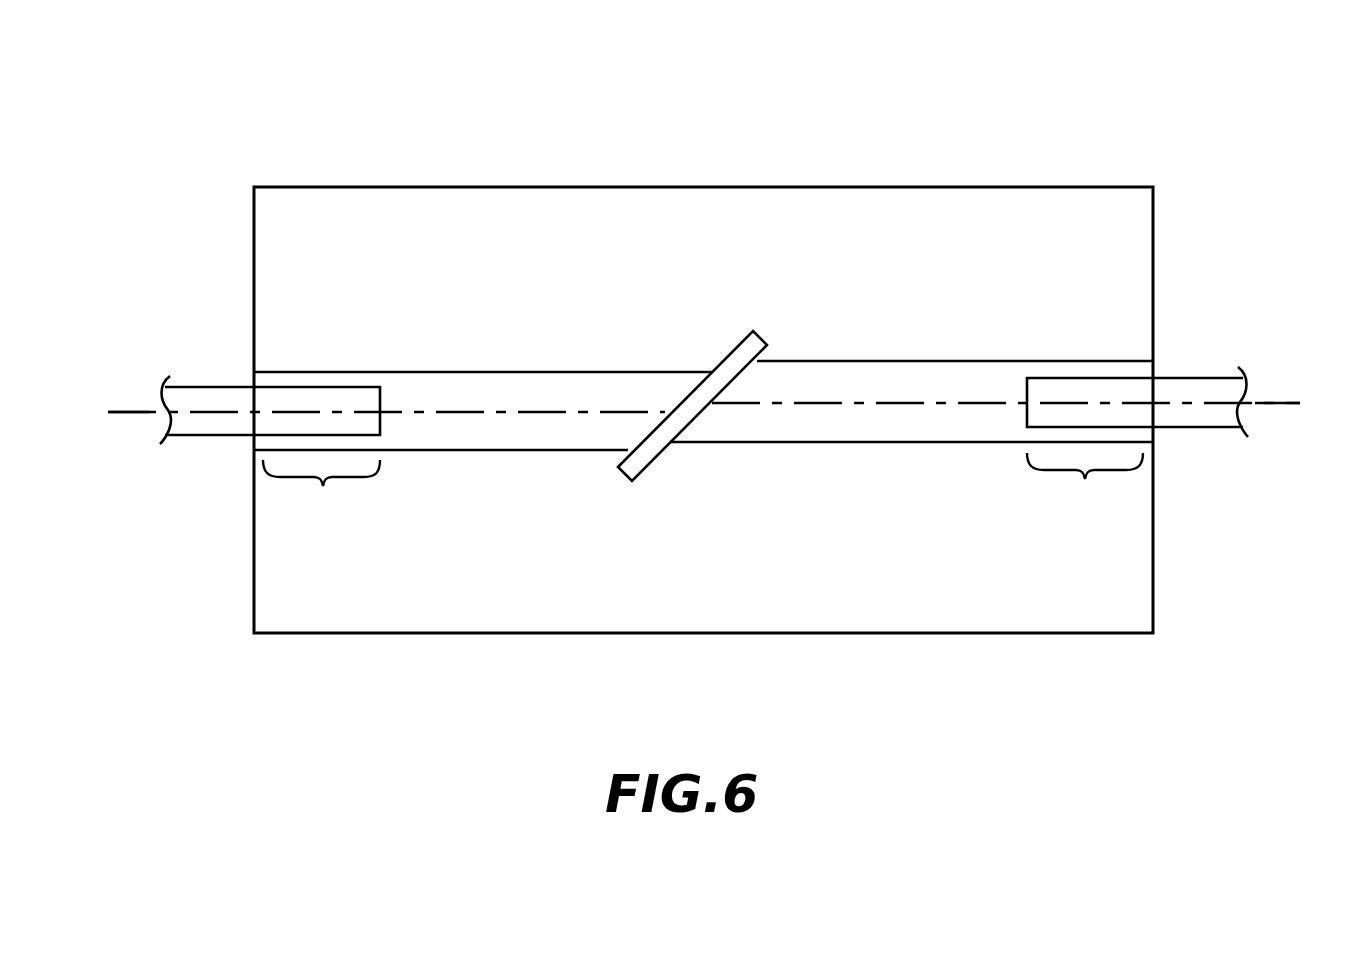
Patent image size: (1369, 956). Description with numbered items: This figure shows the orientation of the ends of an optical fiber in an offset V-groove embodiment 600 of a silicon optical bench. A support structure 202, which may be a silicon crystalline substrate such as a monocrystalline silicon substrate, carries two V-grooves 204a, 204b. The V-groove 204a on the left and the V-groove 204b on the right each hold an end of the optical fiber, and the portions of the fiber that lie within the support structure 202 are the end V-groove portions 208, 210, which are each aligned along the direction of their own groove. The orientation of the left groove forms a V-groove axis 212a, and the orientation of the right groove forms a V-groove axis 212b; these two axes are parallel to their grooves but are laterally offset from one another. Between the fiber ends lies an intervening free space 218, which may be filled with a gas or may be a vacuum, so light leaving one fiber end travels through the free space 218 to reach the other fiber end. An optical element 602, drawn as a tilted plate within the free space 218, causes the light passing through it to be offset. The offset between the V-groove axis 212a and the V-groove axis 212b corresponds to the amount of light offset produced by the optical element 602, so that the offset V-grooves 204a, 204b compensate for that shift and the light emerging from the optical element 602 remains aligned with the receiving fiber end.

The offset V-groove embodiment 600 is at (1076, 151).
The support structure 202 is at (321, 187).
The V-groove 204a is at (350, 371).
The V-groove 204b is at (1046, 361).
The end V-groove portion 208 is at (321, 497).
The end V-groove portion 210 is at (1085, 488).
The V-groove axis 212a is at (130, 412).
The V-groove axis 212b is at (1270, 403).
The free space 218 is at (553, 390).
The optical element 602 is at (766, 340).